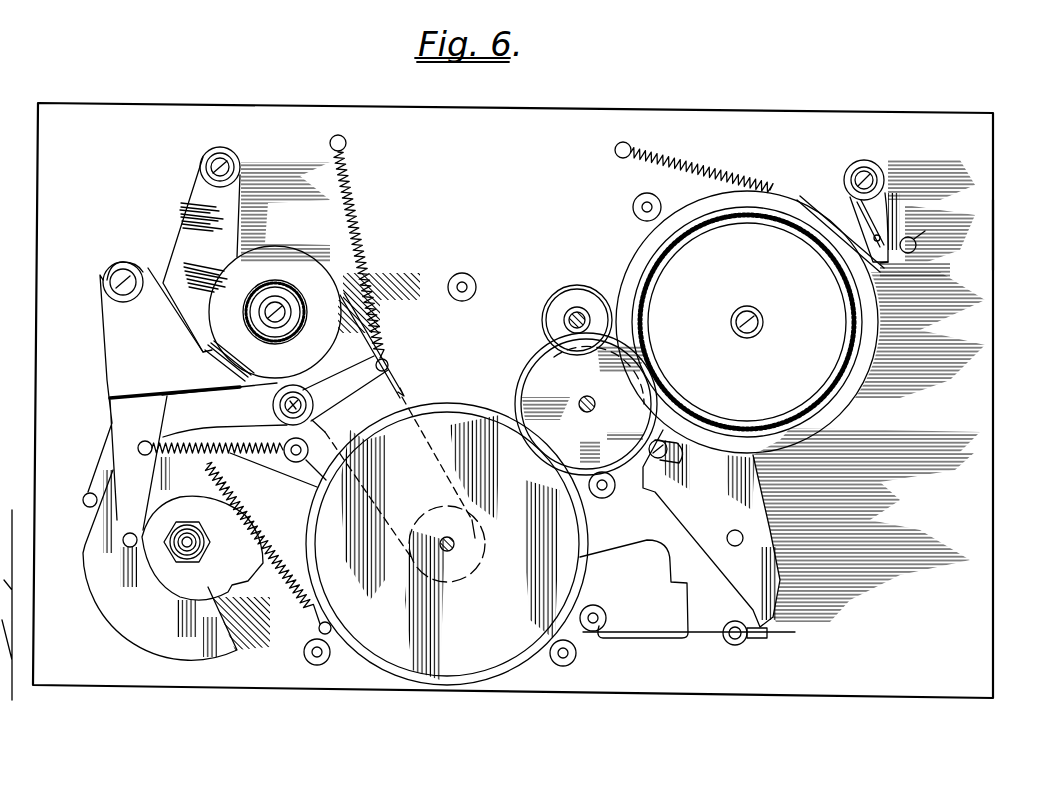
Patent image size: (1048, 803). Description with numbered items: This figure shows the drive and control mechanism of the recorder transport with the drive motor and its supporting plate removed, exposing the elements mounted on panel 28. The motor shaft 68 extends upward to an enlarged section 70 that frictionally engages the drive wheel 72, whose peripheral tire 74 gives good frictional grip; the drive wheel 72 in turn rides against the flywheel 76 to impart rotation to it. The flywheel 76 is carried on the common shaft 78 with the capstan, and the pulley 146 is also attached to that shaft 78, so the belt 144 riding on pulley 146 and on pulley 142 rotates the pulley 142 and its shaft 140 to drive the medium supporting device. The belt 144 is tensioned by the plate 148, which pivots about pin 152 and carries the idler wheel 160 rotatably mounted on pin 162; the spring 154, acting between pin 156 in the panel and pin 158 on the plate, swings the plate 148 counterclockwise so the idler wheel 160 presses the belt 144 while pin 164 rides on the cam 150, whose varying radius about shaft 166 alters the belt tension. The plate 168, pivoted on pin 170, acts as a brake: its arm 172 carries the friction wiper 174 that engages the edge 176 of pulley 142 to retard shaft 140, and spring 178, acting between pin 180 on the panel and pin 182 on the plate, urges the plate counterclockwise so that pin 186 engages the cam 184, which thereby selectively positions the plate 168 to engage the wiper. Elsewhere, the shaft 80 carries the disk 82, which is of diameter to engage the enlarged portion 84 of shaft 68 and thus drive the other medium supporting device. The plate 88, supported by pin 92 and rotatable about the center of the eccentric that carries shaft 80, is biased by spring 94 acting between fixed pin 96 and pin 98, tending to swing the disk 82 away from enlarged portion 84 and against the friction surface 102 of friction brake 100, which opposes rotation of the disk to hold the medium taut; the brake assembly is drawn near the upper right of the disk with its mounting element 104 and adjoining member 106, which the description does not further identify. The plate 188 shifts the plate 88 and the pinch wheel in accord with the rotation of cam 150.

The panel 28 is at (993, 236).
The shaft 68 is at (572, 323).
The enlarged section 70 is at (570, 314).
The drive wheel 72 is at (556, 371).
The peripheral tire 74 is at (528, 364).
The flywheel 76 is at (500, 668).
The shaft 78 is at (456, 546).
The shaft 80 is at (749, 307).
The disk 82 is at (611, 250).
The enlarged portion 84 is at (583, 287).
The plate 88 is at (784, 521).
The pin 92 is at (644, 468).
The spring 94 is at (706, 166).
The fixed pin 96 is at (634, 136).
The pin 98 is at (817, 196).
The friction brake 100 is at (849, 211).
The friction surface 102 is at (917, 248).
The pivot screw 104 is at (866, 170).
The brake lever 106 is at (892, 190).
The shaft 140 is at (283, 297).
The pulley 142 is at (278, 250).
The belt 144 is at (407, 393).
The pulley 146 is at (484, 502).
The plate 148 is at (170, 247).
The cam 150 is at (94, 592).
The pin 152 is at (211, 156).
The spring 154 is at (374, 229).
The pin 156 is at (346, 139).
The pin 158 is at (378, 380).
The idler wheel 160 is at (274, 406).
The pin 162 is at (302, 402).
The pin 164 is at (86, 495).
The shaft 166 is at (176, 553).
The plate 168 is at (104, 347).
The pin 170 is at (110, 281).
The arm 172 is at (198, 410).
The friction wiper 174 is at (216, 353).
The edge 176 is at (232, 372).
The spring 178 is at (228, 446).
The pin 180 is at (304, 448).
The pin 182 is at (144, 442).
The cam 184 is at (228, 596).
The pin 186 is at (123, 540).
The plate 188 is at (306, 474).